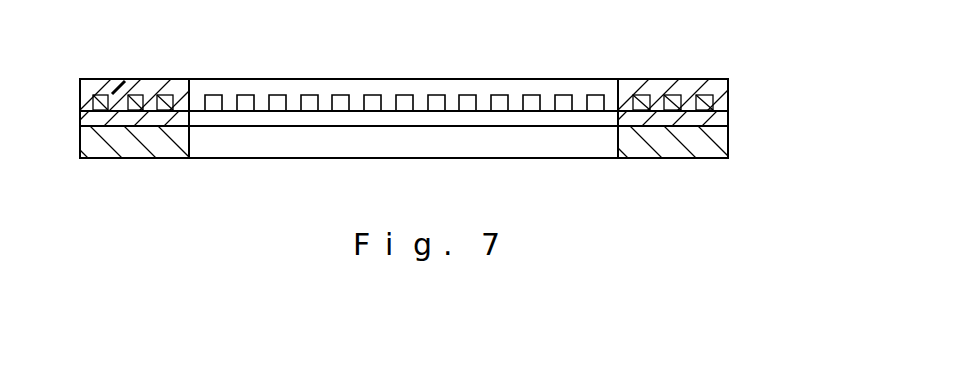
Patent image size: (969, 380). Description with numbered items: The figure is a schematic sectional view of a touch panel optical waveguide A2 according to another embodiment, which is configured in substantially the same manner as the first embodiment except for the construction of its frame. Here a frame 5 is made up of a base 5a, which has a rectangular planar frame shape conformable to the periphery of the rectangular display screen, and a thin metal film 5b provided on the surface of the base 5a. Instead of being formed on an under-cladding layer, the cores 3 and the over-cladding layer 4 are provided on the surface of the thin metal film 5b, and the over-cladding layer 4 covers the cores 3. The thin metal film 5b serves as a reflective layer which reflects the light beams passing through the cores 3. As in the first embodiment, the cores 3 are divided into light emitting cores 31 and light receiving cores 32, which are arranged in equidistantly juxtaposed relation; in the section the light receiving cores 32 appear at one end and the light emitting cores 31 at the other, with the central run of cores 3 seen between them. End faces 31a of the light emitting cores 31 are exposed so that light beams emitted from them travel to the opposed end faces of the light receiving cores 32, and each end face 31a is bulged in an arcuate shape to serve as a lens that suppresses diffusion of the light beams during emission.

The optical waveguide A2 is at (127, 79).
The cores 3 is at (407, 58).
The light receiving cores 32 is at (140, 103).
The light emitting cores 31 is at (692, 84).
The end faces of the light emitting cores 31a is at (433, 97).
The over-cladding layer 4 is at (725, 82).
The frame 5 is at (482, 138).
The thin metal film 5b is at (725, 120).
The base 5a is at (725, 142).